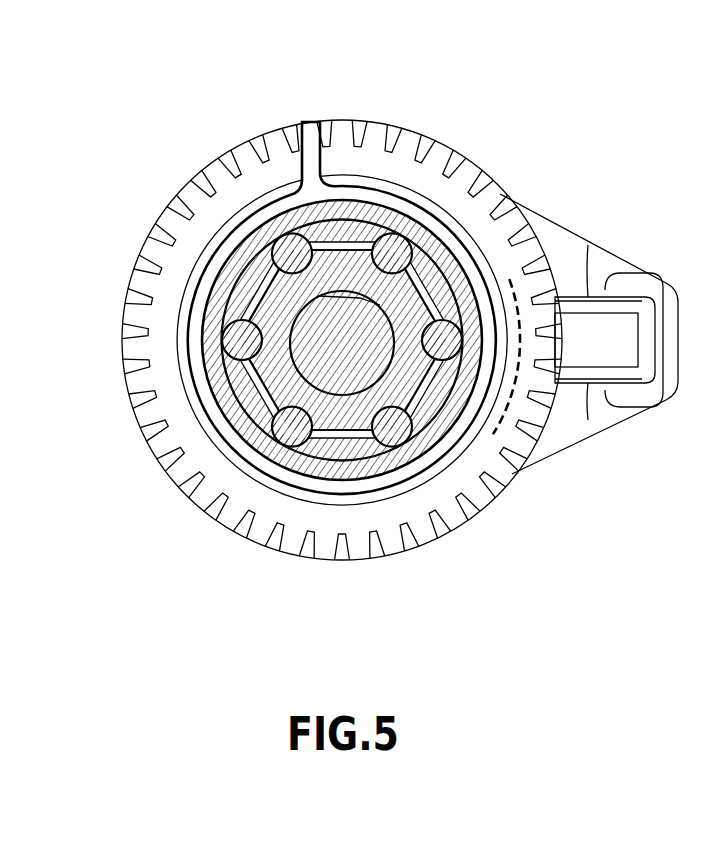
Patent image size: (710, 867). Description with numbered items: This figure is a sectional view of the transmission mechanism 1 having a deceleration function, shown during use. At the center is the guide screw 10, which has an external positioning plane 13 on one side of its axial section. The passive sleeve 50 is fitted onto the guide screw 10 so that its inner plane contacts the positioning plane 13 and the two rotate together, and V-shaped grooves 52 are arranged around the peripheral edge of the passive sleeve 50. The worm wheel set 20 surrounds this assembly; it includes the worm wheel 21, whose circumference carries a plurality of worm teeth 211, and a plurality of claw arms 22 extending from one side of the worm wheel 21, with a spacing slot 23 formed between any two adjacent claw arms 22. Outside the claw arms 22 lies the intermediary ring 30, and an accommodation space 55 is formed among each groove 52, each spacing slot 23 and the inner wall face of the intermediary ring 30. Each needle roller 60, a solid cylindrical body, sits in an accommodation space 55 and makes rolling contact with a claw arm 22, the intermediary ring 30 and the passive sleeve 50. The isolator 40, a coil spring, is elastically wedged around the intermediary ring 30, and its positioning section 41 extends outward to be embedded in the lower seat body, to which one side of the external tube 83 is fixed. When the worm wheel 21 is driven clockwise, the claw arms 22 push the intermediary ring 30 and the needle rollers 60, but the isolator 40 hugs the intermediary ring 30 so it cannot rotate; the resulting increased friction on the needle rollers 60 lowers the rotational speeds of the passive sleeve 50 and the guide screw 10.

The transmission mechanism 1 is at (493, 165).
The guide screw 10 is at (348, 378).
The positioning plane 13 is at (425, 321).
The worm wheel set 20 is at (383, 121).
The worm wheel 21 is at (343, 161).
The worm teeth 211 is at (410, 153).
The claw arm 22 is at (250, 288).
The spacing slot 23 is at (270, 255).
The intermediary ring 30 is at (270, 450).
The isolator 40 is at (258, 215).
The positioning section 41 is at (305, 143).
The passive sleeve 50 is at (253, 387).
The groove 52 is at (222, 353).
The accommodation space 55 is at (378, 445).
The needle roller 60 is at (238, 342).
The external tube 83 is at (603, 417).